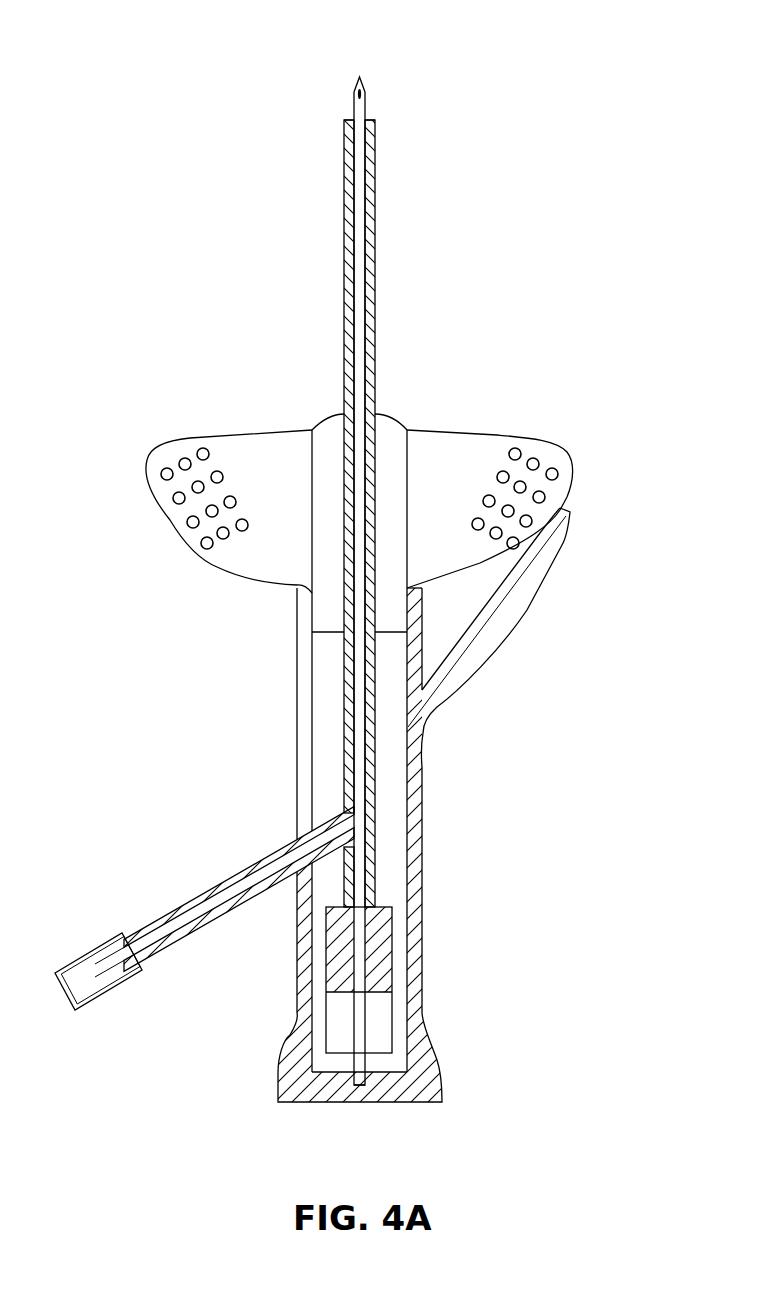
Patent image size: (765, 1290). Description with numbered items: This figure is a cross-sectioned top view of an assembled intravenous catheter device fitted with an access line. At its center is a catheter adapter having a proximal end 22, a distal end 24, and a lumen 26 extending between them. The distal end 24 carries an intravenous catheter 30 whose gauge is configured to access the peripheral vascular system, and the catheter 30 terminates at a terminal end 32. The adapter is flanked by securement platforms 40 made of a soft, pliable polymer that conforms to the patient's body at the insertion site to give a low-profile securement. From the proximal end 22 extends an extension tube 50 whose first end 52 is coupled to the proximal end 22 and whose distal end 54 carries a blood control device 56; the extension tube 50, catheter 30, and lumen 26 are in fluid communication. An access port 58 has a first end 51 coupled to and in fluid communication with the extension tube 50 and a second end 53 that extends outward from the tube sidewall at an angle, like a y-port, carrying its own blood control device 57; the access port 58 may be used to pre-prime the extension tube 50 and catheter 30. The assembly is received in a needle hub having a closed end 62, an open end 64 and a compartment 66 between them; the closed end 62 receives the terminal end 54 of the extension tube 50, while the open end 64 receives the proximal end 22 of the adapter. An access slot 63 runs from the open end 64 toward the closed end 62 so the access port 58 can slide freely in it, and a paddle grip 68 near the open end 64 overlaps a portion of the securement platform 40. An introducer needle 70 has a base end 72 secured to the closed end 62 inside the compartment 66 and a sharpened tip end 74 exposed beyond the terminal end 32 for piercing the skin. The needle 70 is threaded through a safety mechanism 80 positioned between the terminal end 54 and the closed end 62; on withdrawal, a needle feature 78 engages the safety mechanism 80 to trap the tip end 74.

The proximal end 22 is at (387, 628).
The distal end 24 is at (385, 418).
The lumen 26 is at (380, 485).
The intravenous catheter 30 is at (377, 235).
The terminal end 32 is at (368, 117).
The securement platform 40 is at (575, 455).
The extension tube 50 is at (377, 832).
The first end 51 is at (312, 820).
The first end 52 is at (375, 723).
The second end 53 is at (152, 960).
The distal end 54 is at (377, 890).
The blood control device 56 is at (405, 958).
The blood control device 57 is at (87, 1010).
The access port 58 is at (187, 905).
The closed end 62 is at (442, 1085).
The access slot 63 is at (297, 715).
The open end 64 is at (297, 588).
The compartment 66 is at (393, 852).
The paddle grip 68 is at (570, 530).
The introducer needle 70 is at (351, 160).
The base end 72 is at (362, 1085).
The tip end 74 is at (360, 72).
The needle feature 78 is at (350, 123).
The safety mechanism 80 is at (392, 1020).